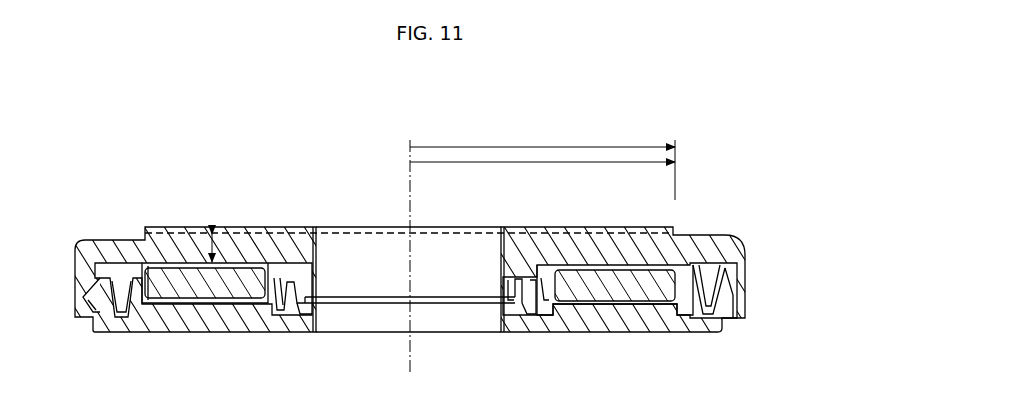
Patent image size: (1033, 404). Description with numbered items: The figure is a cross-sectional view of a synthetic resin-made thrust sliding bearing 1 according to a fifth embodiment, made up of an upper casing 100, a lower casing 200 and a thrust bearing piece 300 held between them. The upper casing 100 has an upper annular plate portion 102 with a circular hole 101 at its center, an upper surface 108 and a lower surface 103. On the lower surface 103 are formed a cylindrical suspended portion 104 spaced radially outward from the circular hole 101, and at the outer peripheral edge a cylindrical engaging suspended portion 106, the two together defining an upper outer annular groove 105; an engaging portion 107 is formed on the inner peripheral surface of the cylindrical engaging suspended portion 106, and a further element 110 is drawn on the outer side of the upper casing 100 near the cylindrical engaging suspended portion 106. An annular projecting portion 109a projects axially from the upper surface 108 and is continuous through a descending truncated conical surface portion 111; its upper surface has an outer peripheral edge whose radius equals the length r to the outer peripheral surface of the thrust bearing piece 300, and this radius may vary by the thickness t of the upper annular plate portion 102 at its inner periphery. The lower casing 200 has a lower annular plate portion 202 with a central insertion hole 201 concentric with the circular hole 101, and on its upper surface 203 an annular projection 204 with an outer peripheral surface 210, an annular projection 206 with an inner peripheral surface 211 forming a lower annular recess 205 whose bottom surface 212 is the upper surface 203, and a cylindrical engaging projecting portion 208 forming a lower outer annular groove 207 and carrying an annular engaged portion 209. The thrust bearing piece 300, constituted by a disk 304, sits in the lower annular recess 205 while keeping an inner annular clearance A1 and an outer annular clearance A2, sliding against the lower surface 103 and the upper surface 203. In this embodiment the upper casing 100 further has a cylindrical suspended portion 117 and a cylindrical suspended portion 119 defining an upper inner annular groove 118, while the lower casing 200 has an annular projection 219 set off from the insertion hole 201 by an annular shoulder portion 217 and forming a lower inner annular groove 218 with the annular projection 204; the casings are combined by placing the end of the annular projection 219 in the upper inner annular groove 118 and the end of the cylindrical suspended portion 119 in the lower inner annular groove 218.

The synthetic resin-made thrust sliding bearing 1 is at (96, 208).
The upper casing 100 is at (530, 245).
The circular hole 101 is at (423, 242).
The upper annular plate portion 102 is at (548, 272).
The lower surface 103 is at (622, 282).
The cylindrical suspended portion 104 is at (702, 282).
The upper outer annular groove 105 is at (722, 275).
The cylindrical engaging suspended portion 106 is at (737, 268).
The engaging portion 107 is at (728, 325).
The upper surface 108 is at (578, 233).
The annular projecting portion 109a is at (600, 266).
The groove 110 is at (737, 300).
The truncated conical surface portion 111 is at (690, 236).
The cylindrical suspended portion 117 is at (503, 287).
The upper inner annular groove 118 is at (513, 280).
The cylindrical suspended portion 119 is at (506, 325).
The lower casing 200 is at (200, 318).
The insertion hole 201 is at (385, 320).
The lower annular plate portion 202 is at (222, 312).
The upper surface 203 is at (246, 297).
The annular projection 204 is at (268, 263).
The lower annular recess 205 is at (174, 262).
The annular projection 206 is at (133, 268).
The lower outer annular groove 207 is at (118, 312).
The cylindrical engaging projecting portion 208 is at (152, 227).
The annular engaged portion 209 is at (88, 310).
The outer peripheral surface 210 is at (247, 268).
The inner peripheral surface 211 is at (156, 270).
The bottom surface 212 is at (180, 294).
The annular shoulder portion 217 is at (310, 297).
The lower inner annular groove 218 is at (296, 310).
The annular projection 219 is at (292, 272).
The thrust bearing piece 300 is at (600, 322).
The disk 304 is at (634, 303).
The inner annular clearance A1 is at (545, 322).
The outer annular clearance A2 is at (690, 322).
The thickness t is at (217, 245).
The length to outer peripheral surface of thrust bearing piece r is at (510, 147).